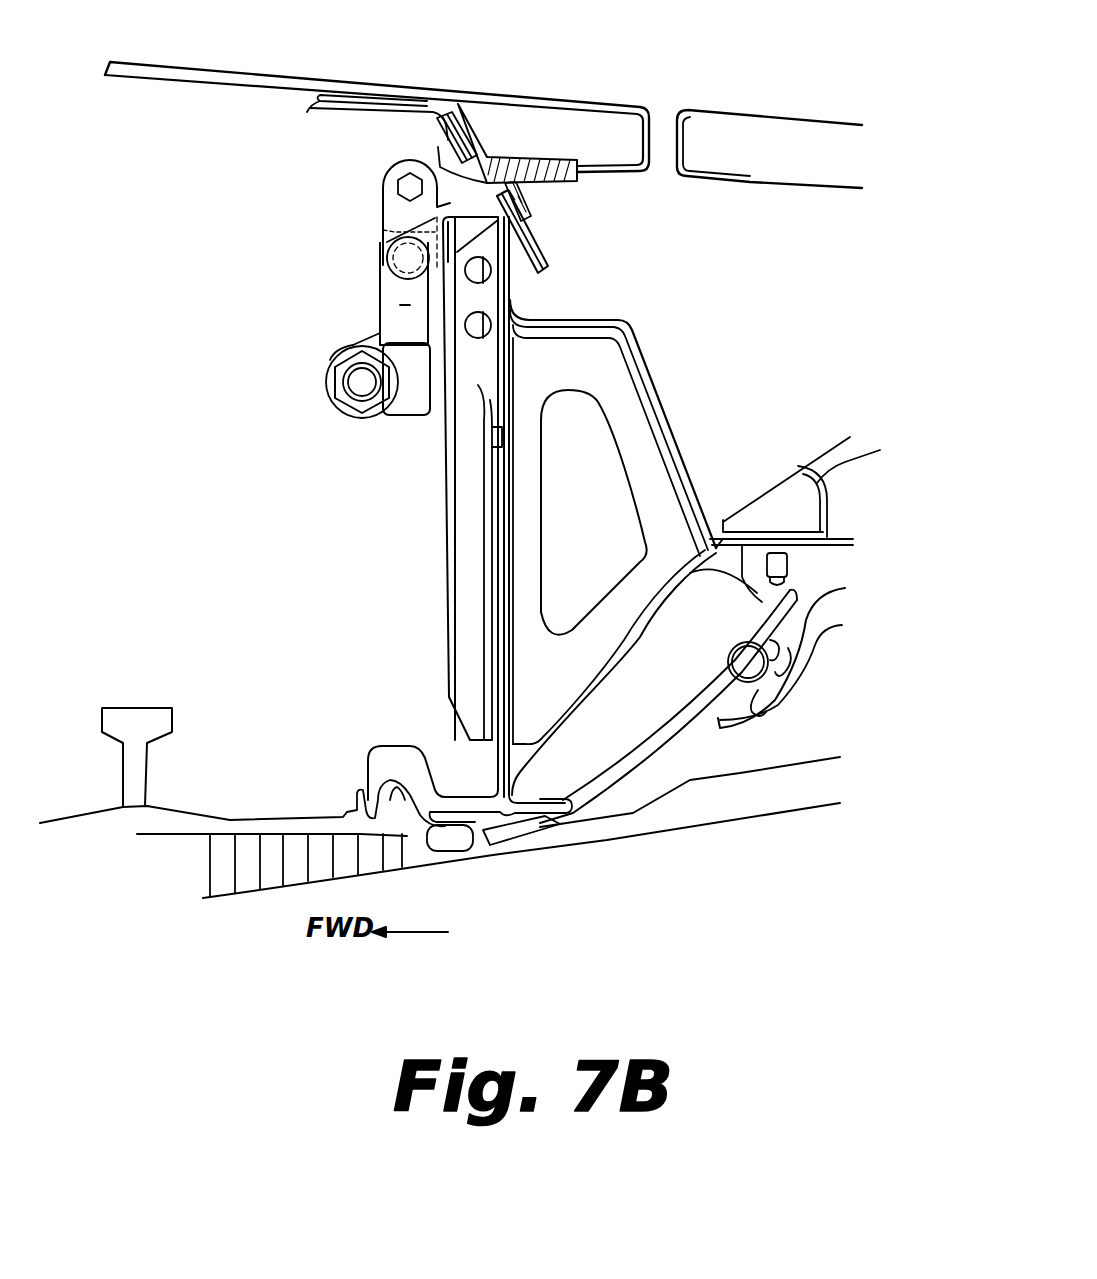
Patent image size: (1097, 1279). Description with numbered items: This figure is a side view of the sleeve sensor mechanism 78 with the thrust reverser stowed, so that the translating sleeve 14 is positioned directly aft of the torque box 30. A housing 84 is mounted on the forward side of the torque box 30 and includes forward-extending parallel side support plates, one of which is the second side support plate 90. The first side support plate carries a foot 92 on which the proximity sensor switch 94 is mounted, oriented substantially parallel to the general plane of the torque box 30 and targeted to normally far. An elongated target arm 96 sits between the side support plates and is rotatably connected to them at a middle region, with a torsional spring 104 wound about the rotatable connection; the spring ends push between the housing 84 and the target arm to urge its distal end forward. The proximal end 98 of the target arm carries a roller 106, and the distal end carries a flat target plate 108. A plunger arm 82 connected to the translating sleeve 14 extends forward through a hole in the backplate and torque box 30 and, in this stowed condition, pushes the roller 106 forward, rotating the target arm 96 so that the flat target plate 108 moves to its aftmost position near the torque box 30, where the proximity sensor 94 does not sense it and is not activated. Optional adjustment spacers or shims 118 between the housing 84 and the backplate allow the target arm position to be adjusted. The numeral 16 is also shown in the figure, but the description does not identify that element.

The translating sleeve 14 is at (567, 101).
The support bracket 16 is at (822, 480).
The torque box 30 is at (648, 445).
The sleeve sensor mechanism 78 is at (258, 379).
The plunger arm 82 is at (557, 181).
The housing 84 is at (440, 377).
The second side support plate 90 is at (387, 222).
The foot 92 is at (360, 342).
The proximity sensor switch 94 is at (357, 387).
The target arm 96 is at (400, 327).
The proximal end 98 is at (410, 182).
The torsional spring 104 is at (387, 240).
The roller 106 is at (400, 160).
The flat target plate 108 is at (407, 410).
The adjustment spacers or shims 118 is at (453, 293).